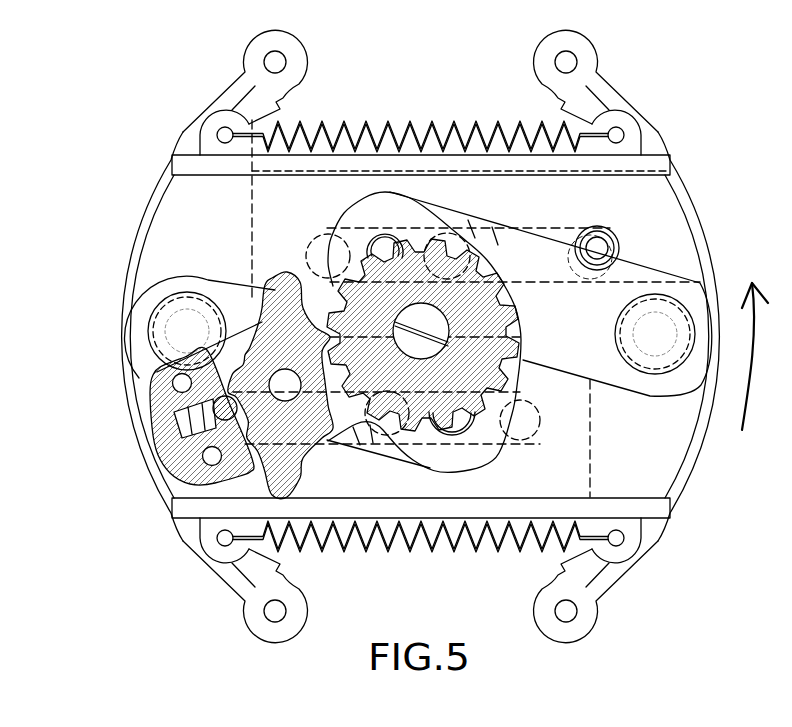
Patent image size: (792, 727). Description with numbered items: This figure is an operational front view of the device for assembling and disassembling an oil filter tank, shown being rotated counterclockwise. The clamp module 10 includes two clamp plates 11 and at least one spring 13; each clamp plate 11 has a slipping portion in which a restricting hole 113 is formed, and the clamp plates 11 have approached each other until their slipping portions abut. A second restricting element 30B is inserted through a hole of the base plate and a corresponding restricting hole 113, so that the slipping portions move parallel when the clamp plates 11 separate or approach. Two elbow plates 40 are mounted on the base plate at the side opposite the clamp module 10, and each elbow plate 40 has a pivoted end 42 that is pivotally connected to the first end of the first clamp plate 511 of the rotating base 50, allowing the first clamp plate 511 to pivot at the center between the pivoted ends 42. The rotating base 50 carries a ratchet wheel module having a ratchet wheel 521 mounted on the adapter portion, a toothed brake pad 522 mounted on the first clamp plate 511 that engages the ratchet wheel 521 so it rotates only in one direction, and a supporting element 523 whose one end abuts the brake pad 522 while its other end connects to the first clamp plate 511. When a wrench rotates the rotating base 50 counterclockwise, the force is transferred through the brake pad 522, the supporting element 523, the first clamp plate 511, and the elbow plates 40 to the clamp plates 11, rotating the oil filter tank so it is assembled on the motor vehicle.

The clamp module 10 is at (146, 127).
The clamp plate 11 is at (128, 229).
The spring 13 is at (400, 115).
The second restricting element 30B is at (604, 226).
The elbow plate 40 is at (128, 313).
The pivoted end 42 is at (398, 455).
The rotating base 50 is at (499, 290).
The restricting hole 113 is at (498, 445).
The first clamp plate 511 is at (183, 453).
The ratchet wheel 521 is at (508, 328).
The brake pad 522 is at (282, 284).
The supporting element 523 is at (177, 420).